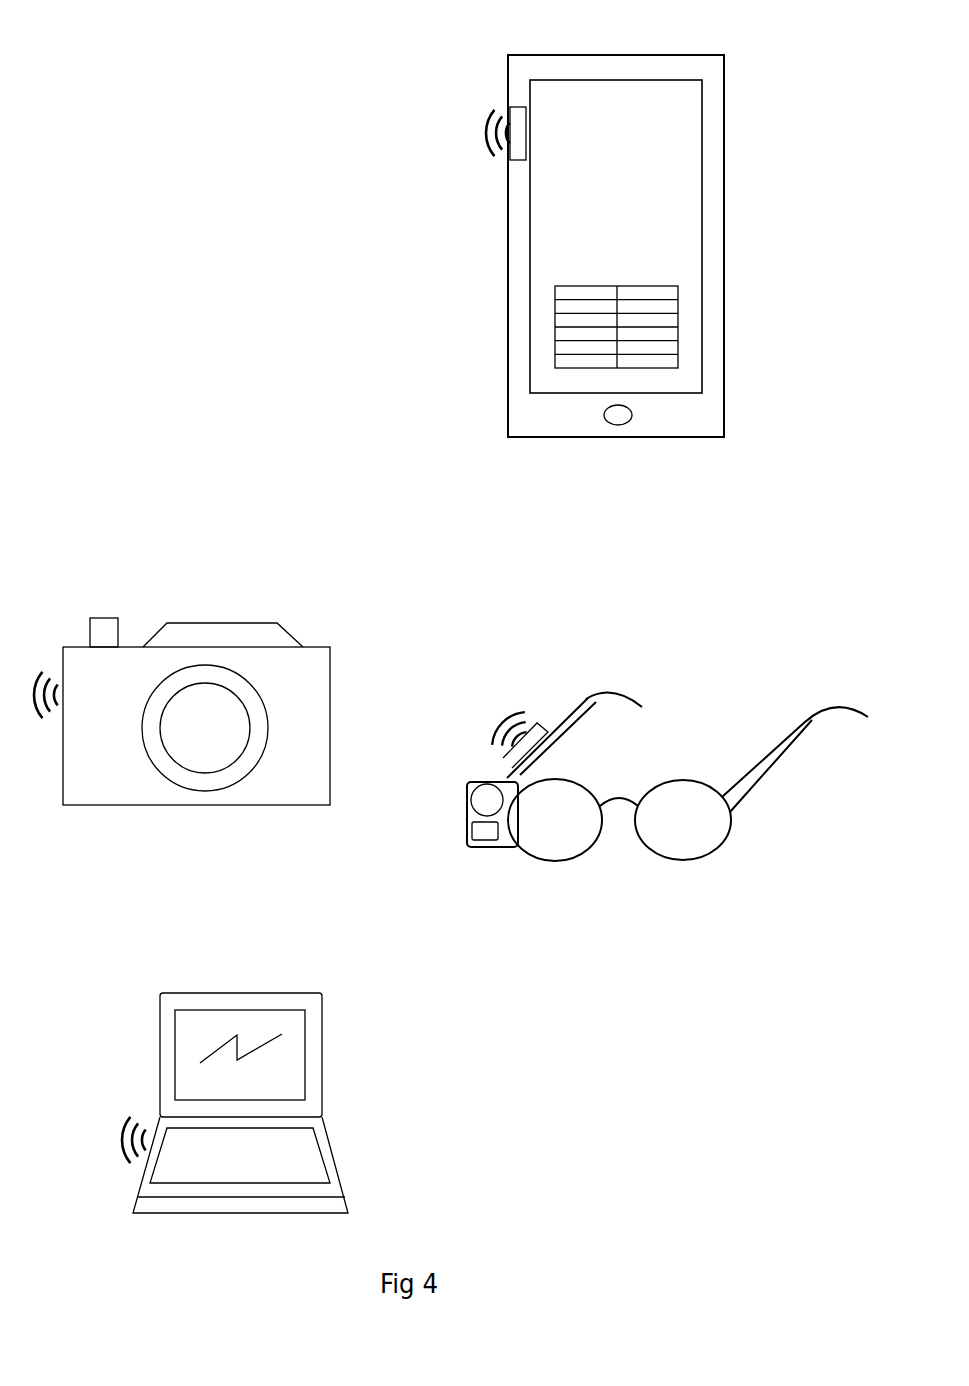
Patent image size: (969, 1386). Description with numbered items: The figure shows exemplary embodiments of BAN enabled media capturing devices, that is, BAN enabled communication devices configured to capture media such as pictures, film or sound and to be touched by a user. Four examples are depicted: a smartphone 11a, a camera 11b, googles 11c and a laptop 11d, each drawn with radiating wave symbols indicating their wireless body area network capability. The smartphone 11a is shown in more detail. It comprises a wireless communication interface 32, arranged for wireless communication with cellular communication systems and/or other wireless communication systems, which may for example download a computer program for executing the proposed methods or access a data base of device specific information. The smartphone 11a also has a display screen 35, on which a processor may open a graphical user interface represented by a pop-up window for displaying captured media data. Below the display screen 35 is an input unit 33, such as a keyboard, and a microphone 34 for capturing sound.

The smartphone 11a is at (610, 55).
The camera 11b is at (218, 620).
The googles 11c is at (583, 815).
The laptop 11d is at (230, 992).
The wireless communication interface 32 is at (508, 150).
The input unit 33 is at (680, 322).
The microphone 34 is at (613, 426).
The display screen 35 is at (673, 128).